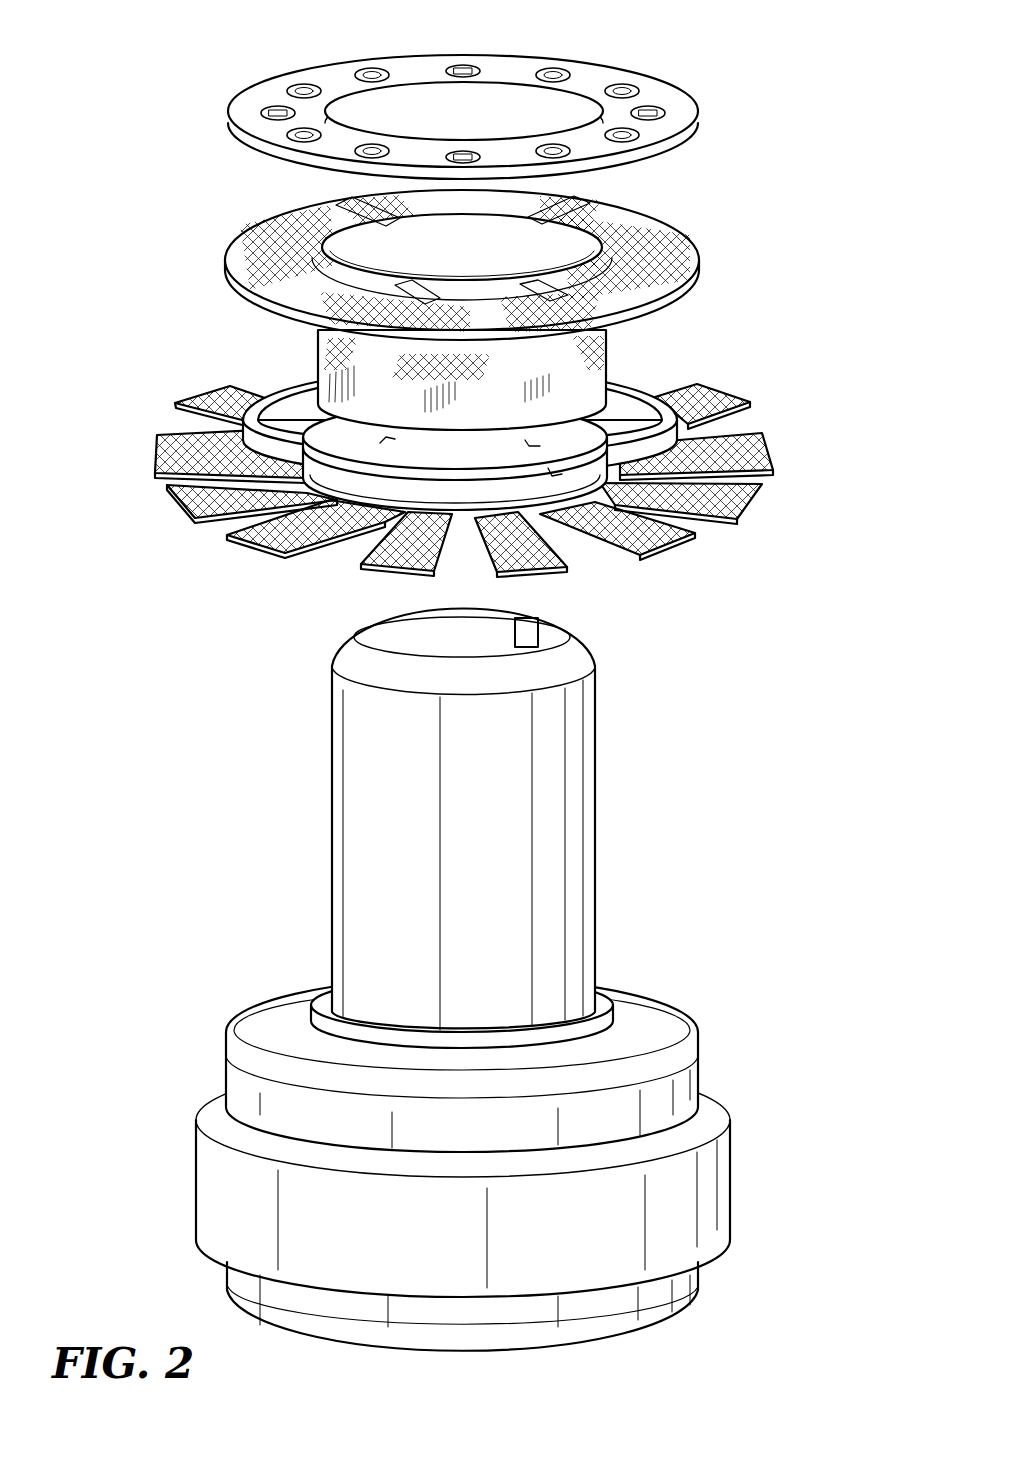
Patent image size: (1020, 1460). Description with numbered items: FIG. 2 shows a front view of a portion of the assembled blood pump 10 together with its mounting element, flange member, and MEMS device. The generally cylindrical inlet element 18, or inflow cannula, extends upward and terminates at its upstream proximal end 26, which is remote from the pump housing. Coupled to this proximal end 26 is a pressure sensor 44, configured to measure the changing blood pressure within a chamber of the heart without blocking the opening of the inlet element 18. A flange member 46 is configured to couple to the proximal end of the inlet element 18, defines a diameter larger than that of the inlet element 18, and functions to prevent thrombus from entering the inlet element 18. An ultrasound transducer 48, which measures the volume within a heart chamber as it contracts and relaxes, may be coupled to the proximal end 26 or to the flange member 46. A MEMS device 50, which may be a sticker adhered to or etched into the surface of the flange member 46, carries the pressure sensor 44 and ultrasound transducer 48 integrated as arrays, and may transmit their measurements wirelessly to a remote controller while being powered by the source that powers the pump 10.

The blood pump 10 is at (733, 1030).
The inlet element 18 is at (597, 777).
The proximal end 26 is at (590, 649).
The pressure sensor 44 is at (527, 630).
The flange member 46 is at (668, 224).
The ultrasound transducer 48 is at (558, 72).
The MEMS device 50 is at (658, 93).